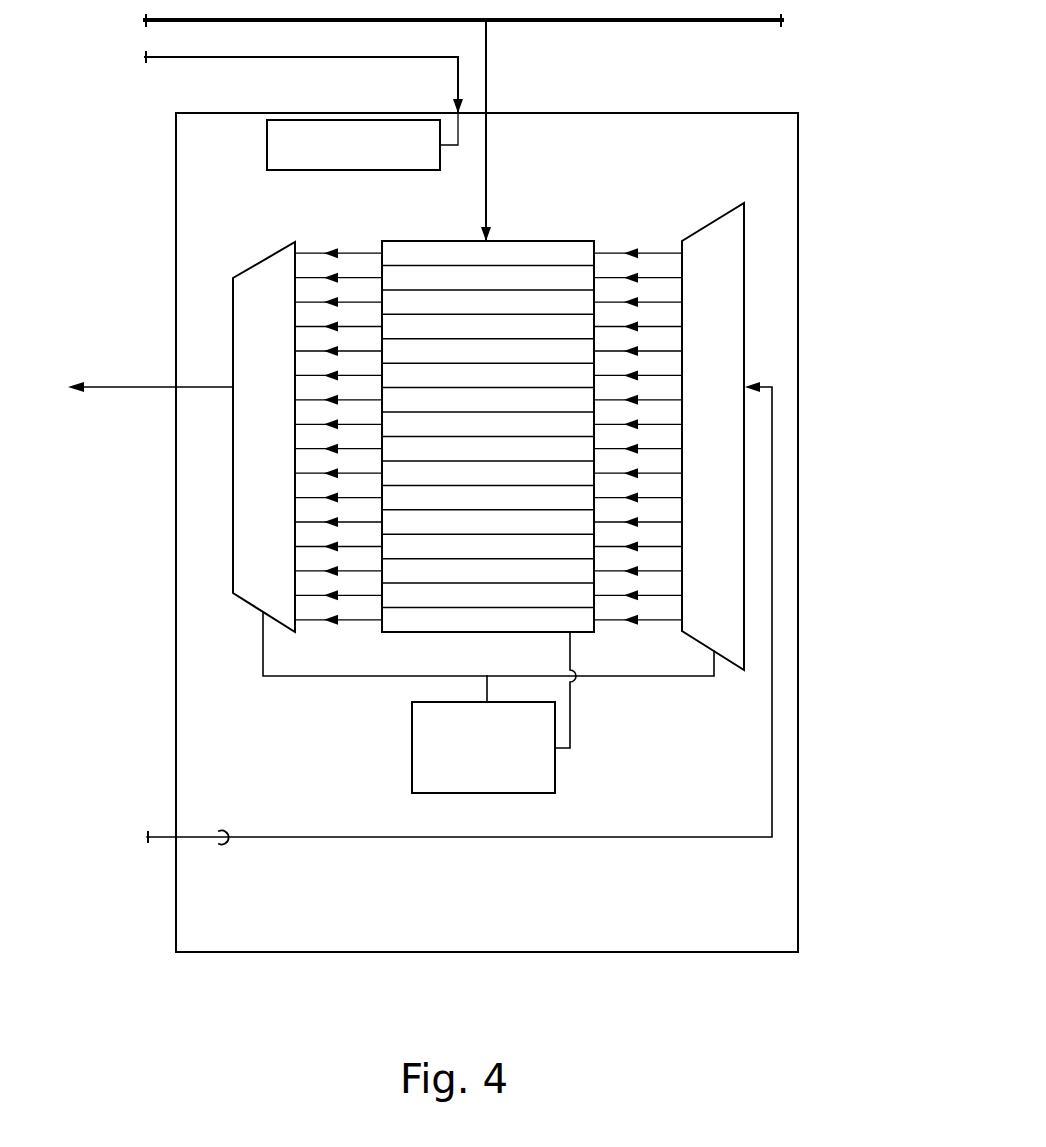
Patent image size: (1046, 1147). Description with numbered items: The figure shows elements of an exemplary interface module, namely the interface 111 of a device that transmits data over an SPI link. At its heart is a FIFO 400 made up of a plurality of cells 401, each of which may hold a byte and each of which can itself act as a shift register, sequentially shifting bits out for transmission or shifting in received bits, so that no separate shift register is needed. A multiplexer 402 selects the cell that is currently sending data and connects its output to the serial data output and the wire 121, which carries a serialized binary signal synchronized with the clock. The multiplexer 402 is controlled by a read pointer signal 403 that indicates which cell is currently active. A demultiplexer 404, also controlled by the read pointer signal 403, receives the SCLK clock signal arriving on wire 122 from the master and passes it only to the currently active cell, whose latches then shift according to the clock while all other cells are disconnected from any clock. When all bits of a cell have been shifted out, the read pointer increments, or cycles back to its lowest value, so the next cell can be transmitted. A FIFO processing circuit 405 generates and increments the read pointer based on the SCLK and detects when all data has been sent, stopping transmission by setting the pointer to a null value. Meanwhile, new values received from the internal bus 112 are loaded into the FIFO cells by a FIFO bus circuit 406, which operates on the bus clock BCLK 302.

The interface 111 is at (212, 113).
The internal bus 112 is at (637, 21).
The bus clock (BCLK) 302 is at (318, 57).
The FIFO bus circuit 406 is at (267, 145).
The FIFO 400 is at (533, 241).
The cells 401 is at (420, 282).
The multiplexer 402 is at (233, 563).
The demultiplexer 404 is at (744, 297).
The wire (serial data output line) 121 is at (112, 385).
The read pointer signal 403 is at (285, 676).
The FIFO processing circuit 405 is at (555, 762).
The wire (SCLK line) 122 is at (160, 835).